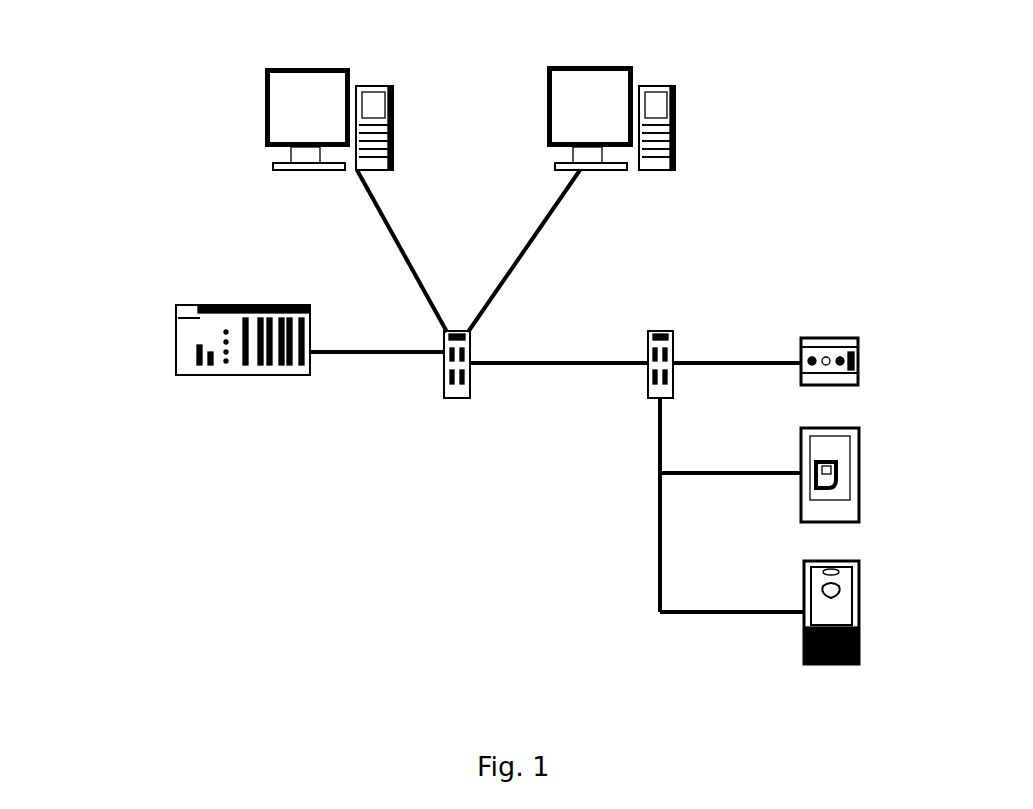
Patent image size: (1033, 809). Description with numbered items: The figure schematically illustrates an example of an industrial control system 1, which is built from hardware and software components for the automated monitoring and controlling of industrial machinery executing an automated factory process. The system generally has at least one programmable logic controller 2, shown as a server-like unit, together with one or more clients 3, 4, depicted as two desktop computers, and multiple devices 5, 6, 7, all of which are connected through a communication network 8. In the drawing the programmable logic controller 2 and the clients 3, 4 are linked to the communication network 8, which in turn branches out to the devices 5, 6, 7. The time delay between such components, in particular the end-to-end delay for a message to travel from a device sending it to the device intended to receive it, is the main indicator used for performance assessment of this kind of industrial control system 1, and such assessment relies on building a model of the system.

The industrial control system 1 is at (106, 151).
The programmable logic controller 2 is at (185, 332).
The client 3 is at (278, 95).
The client 4 is at (610, 90).
The device 5 is at (860, 347).
The device 6 is at (860, 443).
The device 7 is at (860, 572).
The communication network 8 is at (575, 365).